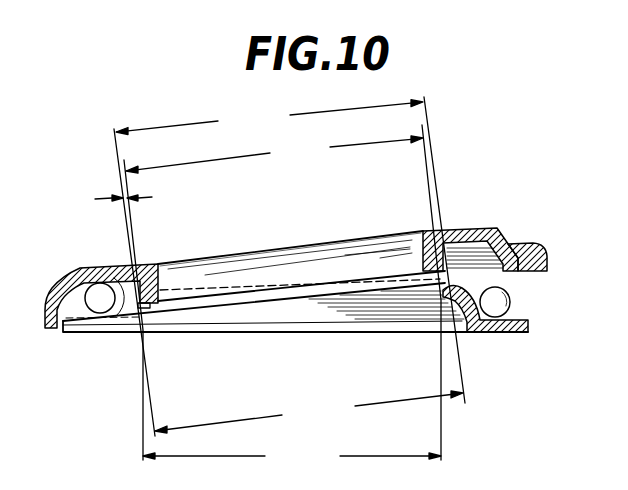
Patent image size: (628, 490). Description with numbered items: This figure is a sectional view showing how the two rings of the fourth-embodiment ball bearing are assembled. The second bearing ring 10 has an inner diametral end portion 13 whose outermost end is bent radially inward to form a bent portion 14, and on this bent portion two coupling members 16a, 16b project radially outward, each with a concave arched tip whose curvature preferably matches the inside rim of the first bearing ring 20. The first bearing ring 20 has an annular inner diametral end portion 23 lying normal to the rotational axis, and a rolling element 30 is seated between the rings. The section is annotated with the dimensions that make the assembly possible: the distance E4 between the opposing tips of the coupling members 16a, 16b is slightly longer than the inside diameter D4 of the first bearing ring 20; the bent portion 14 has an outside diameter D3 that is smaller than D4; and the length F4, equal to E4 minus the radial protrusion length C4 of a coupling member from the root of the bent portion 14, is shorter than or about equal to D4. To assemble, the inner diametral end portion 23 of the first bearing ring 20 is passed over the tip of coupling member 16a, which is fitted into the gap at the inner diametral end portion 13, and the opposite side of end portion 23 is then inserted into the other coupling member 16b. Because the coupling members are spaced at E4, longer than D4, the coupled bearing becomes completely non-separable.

The second bearing ring 10 is at (496, 229).
The inner diametral end portion 13 is at (158, 271).
The bent portion 14 is at (492, 270).
The coupling member 16a is at (138, 306).
The coupling member 16b is at (458, 270).
The first bearing ring 20 is at (489, 333).
The inner diametral end portion 23 is at (100, 269).
The roller 30 is at (511, 302).
The radial protrusion length C4 is at (121, 201).
The outside diameter of the bent portion D3 is at (282, 292).
The inside diameter of the first bearing ring D4 is at (292, 453).
The distance between coupling member tip ends E4 is at (289, 266).
The length F4 is at (309, 412).